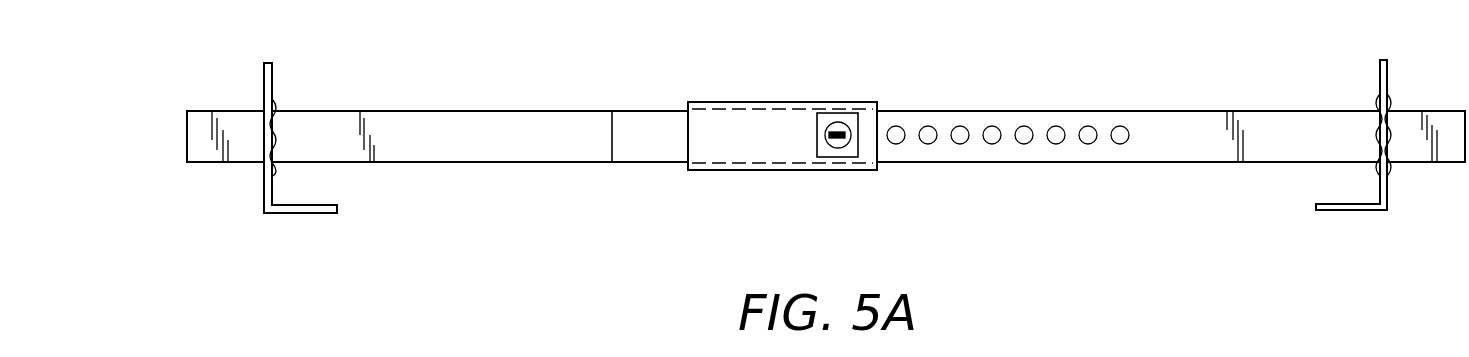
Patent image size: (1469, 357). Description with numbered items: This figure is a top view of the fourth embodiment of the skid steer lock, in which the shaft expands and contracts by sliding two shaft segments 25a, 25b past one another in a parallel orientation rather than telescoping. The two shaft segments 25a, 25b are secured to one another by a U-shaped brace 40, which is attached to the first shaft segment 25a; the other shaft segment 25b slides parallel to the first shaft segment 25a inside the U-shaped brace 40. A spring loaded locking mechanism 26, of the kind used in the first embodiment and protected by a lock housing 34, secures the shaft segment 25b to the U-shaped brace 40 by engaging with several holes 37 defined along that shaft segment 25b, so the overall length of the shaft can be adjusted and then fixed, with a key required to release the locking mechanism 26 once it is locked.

The shaft segment 25a is at (388, 111).
The shaft segment 25b is at (1097, 110).
The spring loaded locking mechanism 26 is at (827, 127).
The lock housing 34 is at (843, 112).
The holes 37 is at (1120, 144).
The U-shaped brace 40 is at (780, 170).